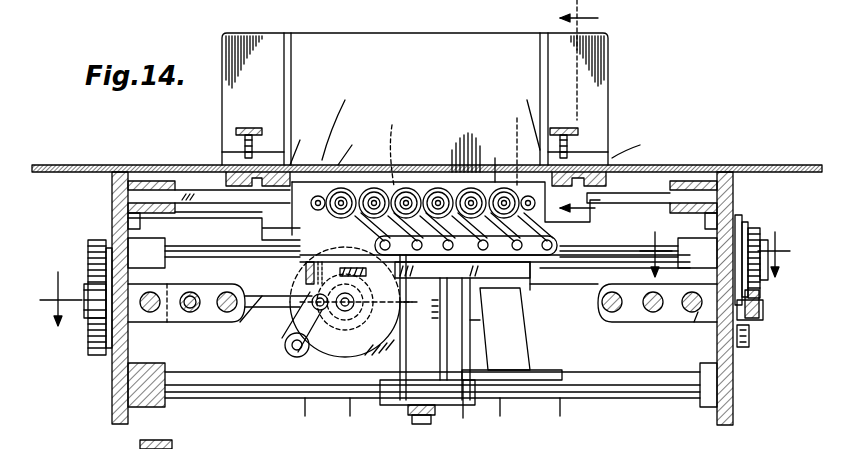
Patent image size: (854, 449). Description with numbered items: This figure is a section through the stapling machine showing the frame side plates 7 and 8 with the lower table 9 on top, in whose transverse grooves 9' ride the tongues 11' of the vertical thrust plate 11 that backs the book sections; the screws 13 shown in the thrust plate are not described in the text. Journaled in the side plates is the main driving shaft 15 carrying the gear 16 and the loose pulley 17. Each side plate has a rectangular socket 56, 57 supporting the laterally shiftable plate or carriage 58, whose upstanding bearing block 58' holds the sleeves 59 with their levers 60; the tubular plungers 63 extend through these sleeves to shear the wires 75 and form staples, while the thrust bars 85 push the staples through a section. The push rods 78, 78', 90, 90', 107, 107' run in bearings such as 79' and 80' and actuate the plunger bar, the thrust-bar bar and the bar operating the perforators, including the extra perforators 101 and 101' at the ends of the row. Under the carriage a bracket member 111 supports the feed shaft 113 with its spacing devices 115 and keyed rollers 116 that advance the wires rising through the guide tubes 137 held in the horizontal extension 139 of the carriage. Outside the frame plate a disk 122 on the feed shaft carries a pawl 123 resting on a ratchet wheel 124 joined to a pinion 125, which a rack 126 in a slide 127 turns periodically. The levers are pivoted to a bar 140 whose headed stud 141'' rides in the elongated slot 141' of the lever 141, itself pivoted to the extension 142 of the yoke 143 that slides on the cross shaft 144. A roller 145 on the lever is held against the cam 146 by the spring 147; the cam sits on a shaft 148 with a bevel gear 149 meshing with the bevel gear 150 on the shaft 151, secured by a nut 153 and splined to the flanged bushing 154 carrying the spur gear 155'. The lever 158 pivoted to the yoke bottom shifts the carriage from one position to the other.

The side plate 7 is at (732, 378).
The side plate 8 is at (114, 375).
The table 9 is at (427, 156).
The transverse grooves 9' is at (469, 142).
The thrust plate 11 is at (428, 99).
The tongues 11' is at (419, 144).
The screw 13 is at (245, 128).
The main driving shaft 15 is at (590, 112).
The gear 16 is at (269, 234).
The pulley 17 is at (711, 254).
The rectangular socket 56 is at (690, 181).
The rectangular socket 57 is at (140, 181).
The plate or carriage 58 is at (628, 188).
The upstanding bearing block 58' is at (355, 146).
The sleeves 59 is at (440, 165).
The levers 60 is at (345, 228).
The plungers 63 is at (468, 135).
The wires 75 is at (518, 314).
The push rod 78 is at (654, 315).
The push rod 78' is at (186, 312).
The bearing 79' is at (680, 316).
The bearing 80' is at (186, 318).
The thrust bars 85 is at (461, 143).
The push rod 90 is at (646, 317).
The push rod 90' is at (190, 328).
The perforator 101 is at (526, 115).
The perforator 101' is at (344, 126).
The push rod 107 is at (685, 336).
The push rod 107' is at (152, 323).
The bracket member 111 is at (540, 277).
The shaft 113 is at (582, 262).
The spacing devices 115 is at (512, 354).
The rollers 116 is at (486, 339).
The disk 122 is at (740, 215).
The pawl 123 is at (748, 222).
The ratchet wheel 124 is at (760, 230).
The pinion 125 is at (768, 250).
The rack 126 is at (763, 302).
The slide 127 is at (752, 325).
The guide tubes 137 is at (528, 350).
The horizontal extension 139 is at (564, 304).
The bar 140 is at (556, 256).
The lever 141 is at (332, 322).
The elongated slot 141' is at (422, 248).
The headed stud 141'' is at (364, 211).
The extension 142 is at (300, 357).
The yoke 143 is at (463, 406).
The cross shaft 144 is at (590, 395).
The roller 145 is at (312, 296).
The cam 146 is at (352, 357).
The spring 147 is at (418, 278).
The shaft 148 is at (345, 312).
The bevel gear 149 is at (408, 338).
The bevel gear 150 is at (300, 270).
The shaft 151 is at (250, 330).
The nut 153 is at (406, 308).
The flanged bushing 154 is at (86, 312).
The spur gear 155' is at (80, 309).
The lever 158 is at (410, 420).